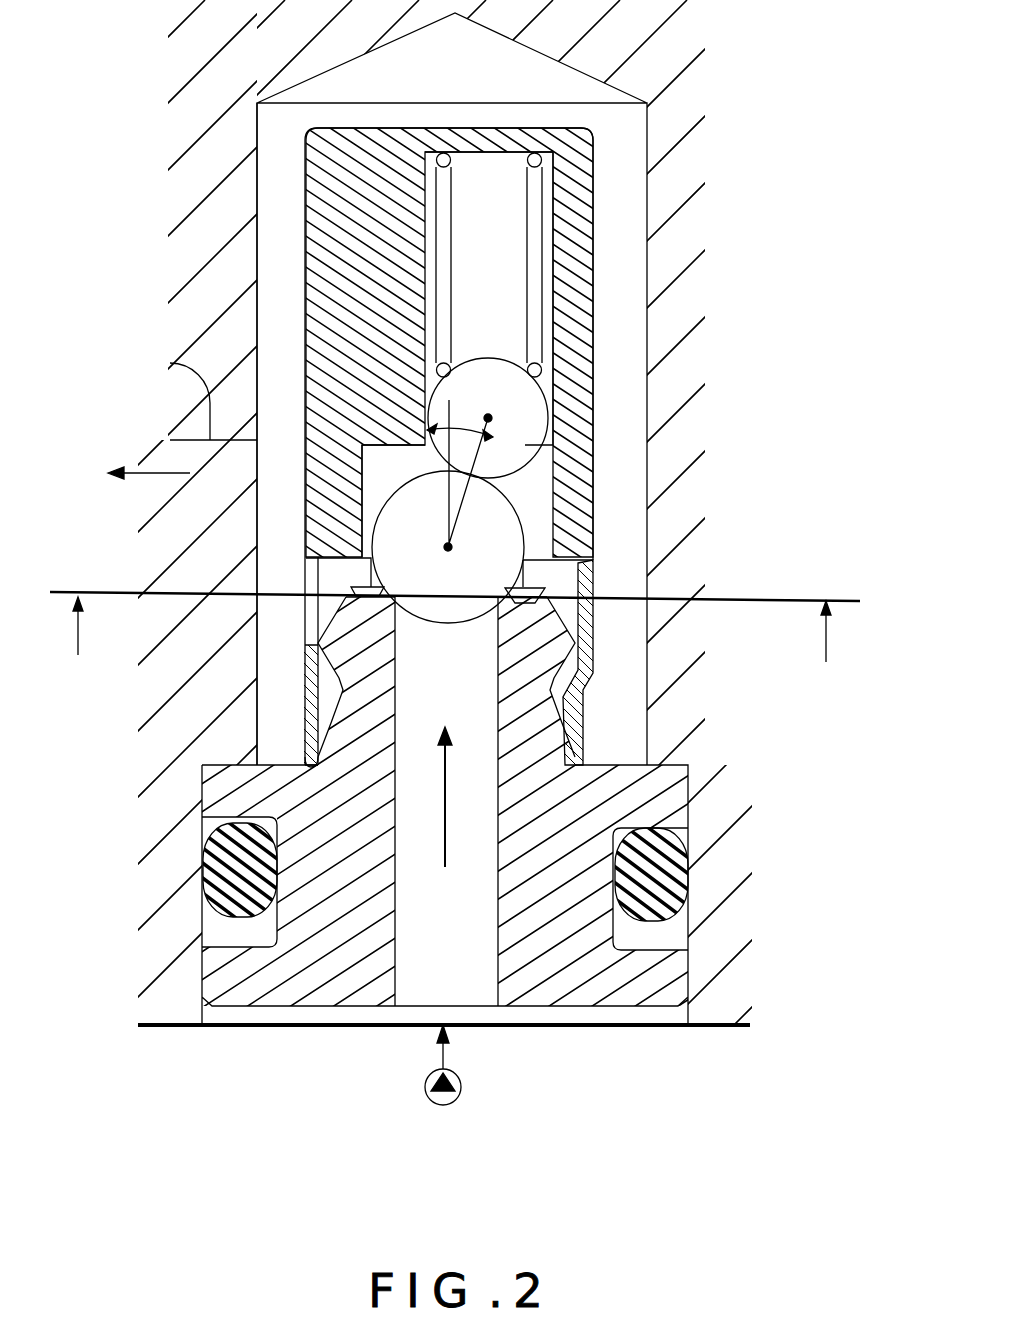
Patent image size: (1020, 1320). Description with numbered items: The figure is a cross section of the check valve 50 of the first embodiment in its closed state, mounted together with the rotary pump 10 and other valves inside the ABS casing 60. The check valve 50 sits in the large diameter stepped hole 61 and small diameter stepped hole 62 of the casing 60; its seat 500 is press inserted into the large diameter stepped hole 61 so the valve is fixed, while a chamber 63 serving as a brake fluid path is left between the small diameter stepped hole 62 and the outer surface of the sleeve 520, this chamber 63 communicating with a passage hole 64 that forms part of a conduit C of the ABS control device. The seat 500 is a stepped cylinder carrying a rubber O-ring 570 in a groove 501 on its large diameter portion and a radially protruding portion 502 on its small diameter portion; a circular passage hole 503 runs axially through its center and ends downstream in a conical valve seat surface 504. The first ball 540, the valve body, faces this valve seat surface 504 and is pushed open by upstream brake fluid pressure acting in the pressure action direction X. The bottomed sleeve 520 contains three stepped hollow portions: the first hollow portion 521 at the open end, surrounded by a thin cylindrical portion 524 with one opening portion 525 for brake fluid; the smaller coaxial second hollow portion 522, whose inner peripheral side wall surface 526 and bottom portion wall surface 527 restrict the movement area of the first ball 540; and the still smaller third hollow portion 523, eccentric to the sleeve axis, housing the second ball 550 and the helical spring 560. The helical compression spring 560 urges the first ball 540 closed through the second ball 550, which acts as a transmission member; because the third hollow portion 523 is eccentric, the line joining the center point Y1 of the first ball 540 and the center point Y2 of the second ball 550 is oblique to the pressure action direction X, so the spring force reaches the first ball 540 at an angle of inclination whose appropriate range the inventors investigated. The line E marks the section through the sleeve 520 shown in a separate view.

The rotary pump 10 is at (462, 1082).
The check valve 50 is at (598, 653).
The ABS casing 60 is at (240, 648).
The large diameter stepped hole 61 is at (202, 930).
The small diameter stepped hole 62 is at (253, 688).
The chamber 63 is at (277, 713).
The passage hole 64 is at (170, 363).
The seat 500 is at (605, 808).
The groove 501 is at (660, 932).
The protruding portion 502 is at (560, 668).
The passage hole 503 is at (413, 990).
The valve seat surface 504 is at (580, 580).
The sleeve 520 is at (575, 277).
The first hollow portion 521 is at (318, 560).
The second hollow portion 522 is at (368, 440).
The third hollow portion 523 is at (498, 213).
The cylindrical portion 524 is at (304, 733).
The opening portion 525 is at (304, 617).
The inner peripheral side wall surface 526 is at (303, 457).
The bottom portion wall surface 527 is at (390, 443).
The first ball 540 is at (473, 522).
The second ball 550 is at (508, 395).
The helical spring 560 is at (593, 143).
The O-ring 570 is at (660, 860).
The pressure action direction X is at (436, 809).
The conduit C is at (132, 472).
The line E— E is at (453, 627).
The center point of the first ball Y1 is at (444, 547).
The center point of the second ball Y2 is at (486, 412).